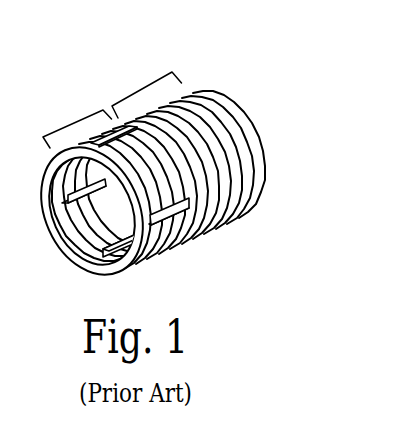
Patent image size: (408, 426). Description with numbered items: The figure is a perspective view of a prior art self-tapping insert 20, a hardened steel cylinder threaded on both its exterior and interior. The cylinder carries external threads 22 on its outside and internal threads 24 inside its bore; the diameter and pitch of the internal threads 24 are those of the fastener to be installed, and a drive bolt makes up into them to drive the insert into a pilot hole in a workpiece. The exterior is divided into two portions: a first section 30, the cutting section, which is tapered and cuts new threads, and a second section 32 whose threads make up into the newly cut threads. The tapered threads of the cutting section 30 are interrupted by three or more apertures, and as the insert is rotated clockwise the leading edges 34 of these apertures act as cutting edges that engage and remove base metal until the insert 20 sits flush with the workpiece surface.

The self-tapping insert 20 is at (187, 152).
The external threads 22 is at (230, 218).
The internal threads 24 is at (72, 248).
The first section 30 is at (80, 122).
The second section 32 is at (147, 84).
The leading edge 34 is at (173, 247).